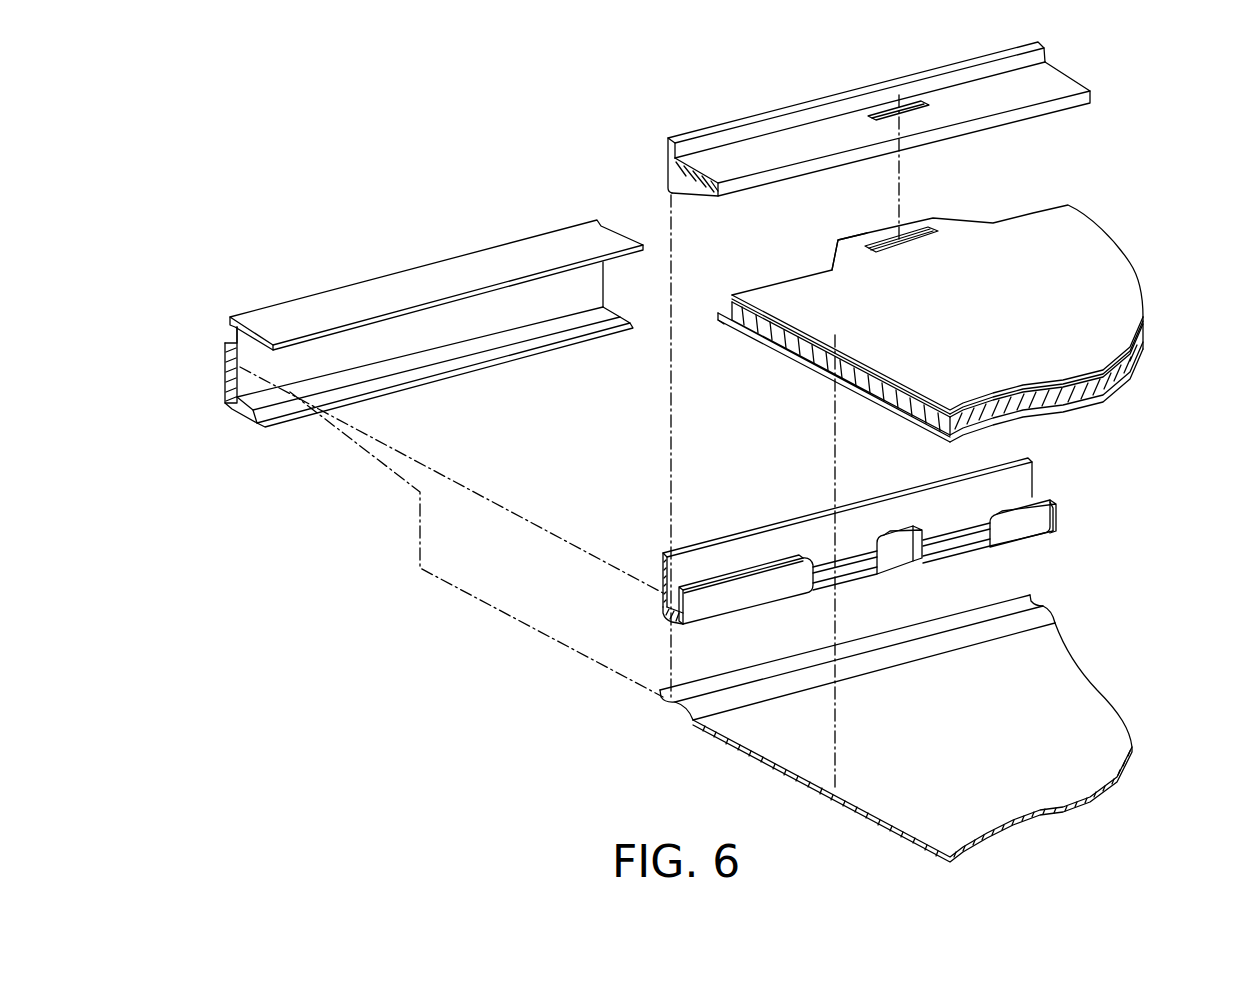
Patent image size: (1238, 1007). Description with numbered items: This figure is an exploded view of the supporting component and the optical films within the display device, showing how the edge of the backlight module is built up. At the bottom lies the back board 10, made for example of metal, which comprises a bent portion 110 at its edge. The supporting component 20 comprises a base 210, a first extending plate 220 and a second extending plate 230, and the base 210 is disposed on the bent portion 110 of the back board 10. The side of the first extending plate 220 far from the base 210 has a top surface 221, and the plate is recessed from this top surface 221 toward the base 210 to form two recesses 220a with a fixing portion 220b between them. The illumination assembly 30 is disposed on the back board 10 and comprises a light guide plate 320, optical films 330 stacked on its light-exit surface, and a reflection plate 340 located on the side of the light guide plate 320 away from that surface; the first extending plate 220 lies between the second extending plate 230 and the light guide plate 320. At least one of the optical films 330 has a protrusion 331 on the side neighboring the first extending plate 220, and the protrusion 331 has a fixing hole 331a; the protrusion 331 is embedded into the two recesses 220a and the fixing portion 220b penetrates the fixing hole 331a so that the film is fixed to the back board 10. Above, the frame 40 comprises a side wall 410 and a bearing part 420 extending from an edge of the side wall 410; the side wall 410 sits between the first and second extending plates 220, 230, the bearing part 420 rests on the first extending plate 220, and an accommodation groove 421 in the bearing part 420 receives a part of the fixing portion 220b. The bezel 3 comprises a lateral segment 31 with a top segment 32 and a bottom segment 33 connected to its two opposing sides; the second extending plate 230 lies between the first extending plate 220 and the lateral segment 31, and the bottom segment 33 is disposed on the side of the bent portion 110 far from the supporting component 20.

The bezel 3 is at (394, 346).
The lateral segment 31 is at (226, 373).
The top segment 32 is at (276, 322).
The bottom segment 33 is at (248, 416).
The back board 10 is at (864, 728).
The bent portion 110 is at (683, 700).
The supporting component 20 is at (815, 544).
The base 210 is at (683, 620).
The first extending plate 220 is at (724, 600).
The recesses 220a is at (822, 574).
The fixing portion 220b is at (895, 546).
The top surface 221 is at (752, 572).
The second extending plate 230 is at (662, 594).
The illumination assembly 30 is at (959, 298).
The light guide plate 320 is at (797, 345).
The optical films 330 is at (1053, 245).
The protrusion 331 is at (830, 251).
The fixing hole 331a is at (906, 236).
The reflection plate 340 is at (724, 328).
The frame 40 is at (842, 139).
The side wall 410 is at (668, 152).
The bearing part 420 is at (713, 202).
The accommodation groove 421 is at (897, 100).